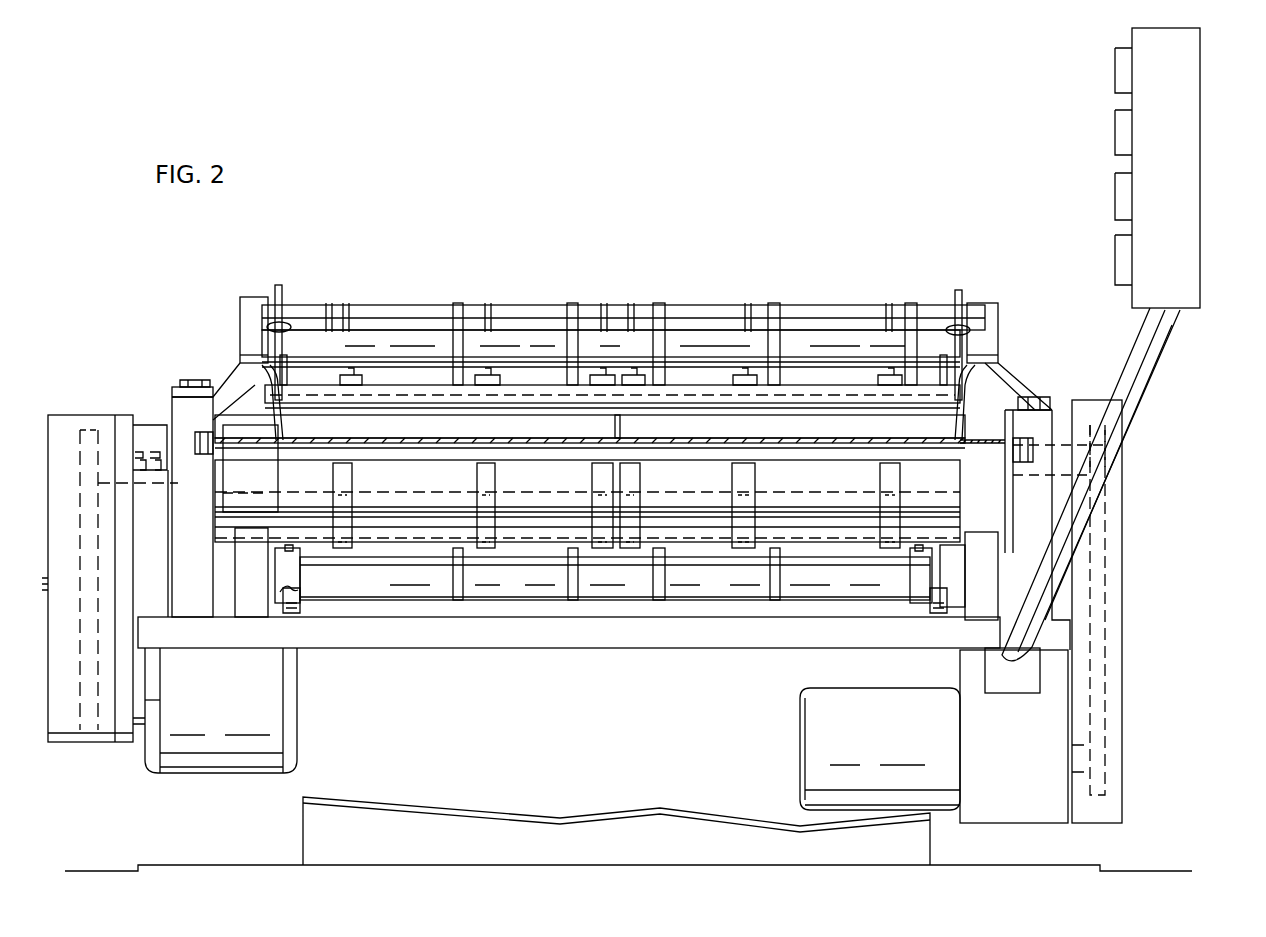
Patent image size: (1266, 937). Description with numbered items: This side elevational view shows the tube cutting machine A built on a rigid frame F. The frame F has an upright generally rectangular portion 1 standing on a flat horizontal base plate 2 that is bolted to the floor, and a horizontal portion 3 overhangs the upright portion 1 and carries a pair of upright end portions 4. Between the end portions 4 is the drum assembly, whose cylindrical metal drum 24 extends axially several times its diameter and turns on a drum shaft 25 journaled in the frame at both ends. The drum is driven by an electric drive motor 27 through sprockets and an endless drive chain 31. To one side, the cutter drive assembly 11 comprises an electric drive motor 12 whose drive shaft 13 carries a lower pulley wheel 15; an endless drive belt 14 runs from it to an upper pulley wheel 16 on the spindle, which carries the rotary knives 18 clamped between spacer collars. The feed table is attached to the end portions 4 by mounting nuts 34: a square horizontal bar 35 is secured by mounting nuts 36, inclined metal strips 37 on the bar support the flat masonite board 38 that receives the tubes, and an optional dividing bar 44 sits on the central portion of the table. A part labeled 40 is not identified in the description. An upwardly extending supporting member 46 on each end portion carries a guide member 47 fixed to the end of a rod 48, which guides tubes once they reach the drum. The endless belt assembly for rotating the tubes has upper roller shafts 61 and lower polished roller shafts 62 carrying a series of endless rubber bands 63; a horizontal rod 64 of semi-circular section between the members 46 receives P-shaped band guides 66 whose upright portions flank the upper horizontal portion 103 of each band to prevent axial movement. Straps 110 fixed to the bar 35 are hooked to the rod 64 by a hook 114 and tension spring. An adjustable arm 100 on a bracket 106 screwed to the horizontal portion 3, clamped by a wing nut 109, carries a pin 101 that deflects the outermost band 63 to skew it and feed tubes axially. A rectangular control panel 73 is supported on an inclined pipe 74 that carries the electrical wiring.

The upright generally rectangular portion 1 is at (925, 840).
The flat horizontal base plate 2 is at (218, 863).
The horizontal portion 3 is at (540, 650).
The upright end portions 4 is at (185, 580).
The drive assembly 11 is at (139, 386).
The electric drive motor 12 is at (228, 768).
The drive shaft 13 is at (160, 700).
The endless drive belt 14 is at (80, 618).
The lower pulley wheel 15 is at (138, 740).
The upper pulley wheel 16 is at (146, 490).
The rotary knives 18 is at (285, 354).
The cylindrical metal drum 24 is at (257, 487).
The drum shaft 25 is at (1075, 440).
The electric drive motor 27 is at (822, 700).
The endless drive chain 31 is at (1100, 572).
The mounting nuts 34 is at (1033, 397).
The horizontal bar 35 is at (405, 462).
The mounting nuts 36 is at (1022, 462).
The metal strips 37 is at (207, 455).
The masonite board 38 is at (803, 442).
The brace 40 is at (262, 440).
The dividing bar 44 is at (610, 427).
The supporting member 46 is at (250, 300).
The guide member 47 is at (265, 401).
The rod 48 is at (275, 290).
The upper roller shafts 61 is at (390, 346).
The roller shafts 62 is at (508, 600).
The endless rubber bands 63 is at (570, 352).
The horizontal rod 64 is at (702, 305).
The band guides 66 is at (573, 304).
The control panel 73 is at (1190, 126).
The inclined pipe 74 is at (1148, 358).
The adjustable arm 100 is at (980, 572).
The pin 101 is at (312, 552).
The upper horizontal portion 103 is at (455, 303).
The bracket 106 is at (930, 607).
The wing nut 109 is at (278, 600).
The strap 110 is at (345, 530).
The hook 114 is at (346, 306).
The tube cutting machine A is at (469, 282).
The rigid frame F is at (303, 800).